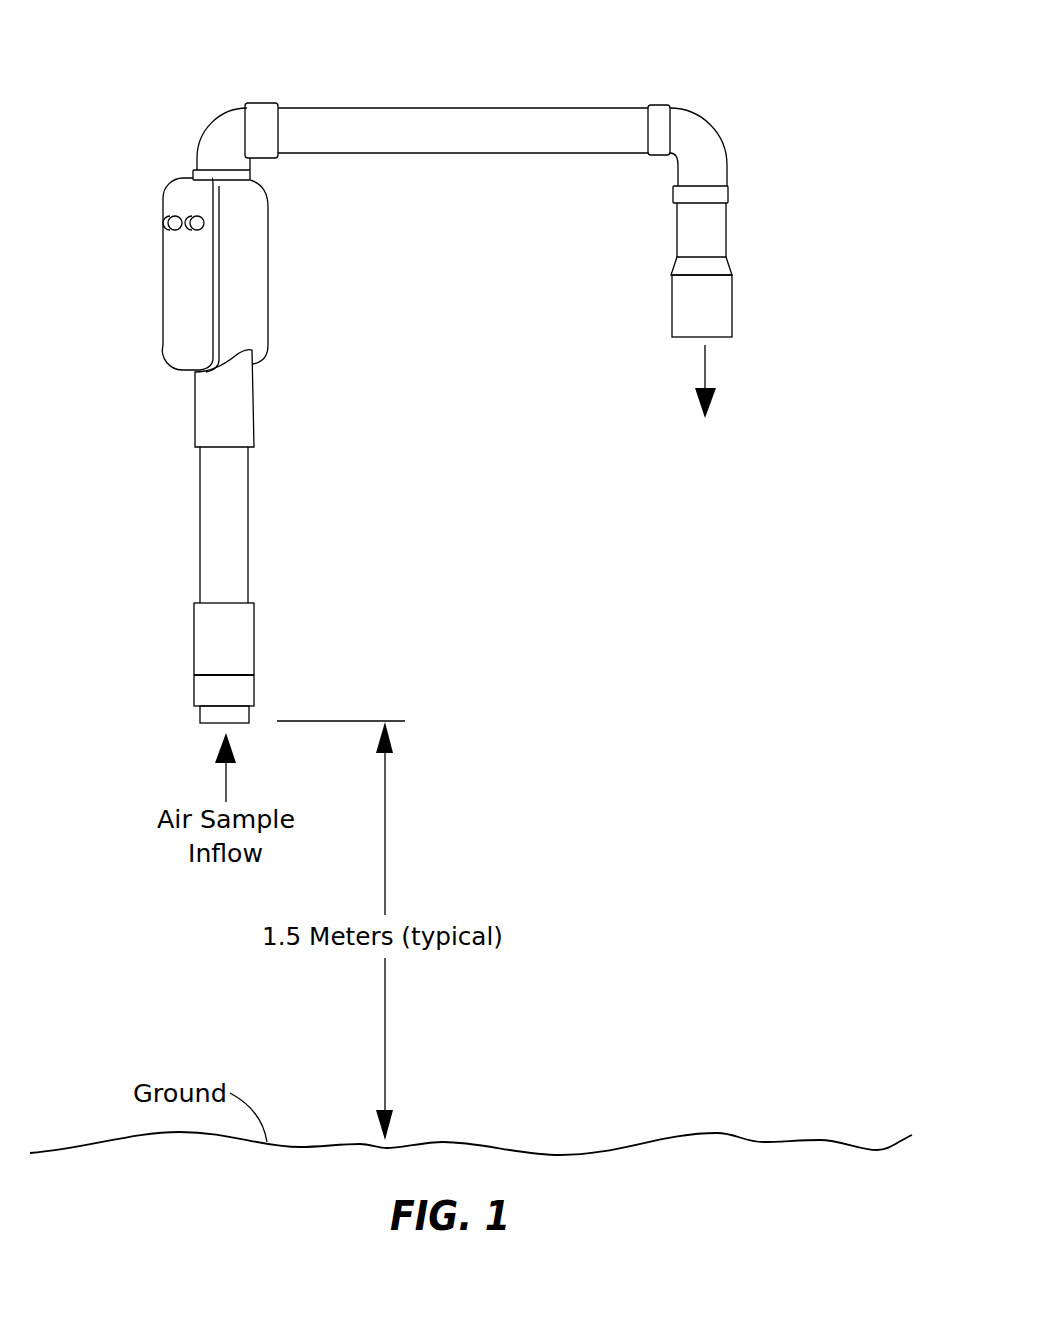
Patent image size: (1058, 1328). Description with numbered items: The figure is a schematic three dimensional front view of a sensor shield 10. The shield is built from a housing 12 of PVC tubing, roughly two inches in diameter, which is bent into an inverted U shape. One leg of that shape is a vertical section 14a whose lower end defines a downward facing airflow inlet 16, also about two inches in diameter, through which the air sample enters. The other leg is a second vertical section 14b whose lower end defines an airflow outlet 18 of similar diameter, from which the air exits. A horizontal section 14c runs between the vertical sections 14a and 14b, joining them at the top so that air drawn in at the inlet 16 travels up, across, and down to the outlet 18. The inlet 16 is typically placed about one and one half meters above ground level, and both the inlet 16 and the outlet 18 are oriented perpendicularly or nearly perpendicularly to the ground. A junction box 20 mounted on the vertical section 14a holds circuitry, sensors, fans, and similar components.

The sensor shield 10 is at (684, 57).
The housing 12 is at (448, 107).
The vertical section 14a is at (207, 517).
The second vertical section 14b is at (730, 230).
The horizontal section 14c is at (473, 153).
The airflow inlet 16 is at (208, 728).
The airflow outlet 18 is at (682, 338).
The junction box 20 is at (182, 293).